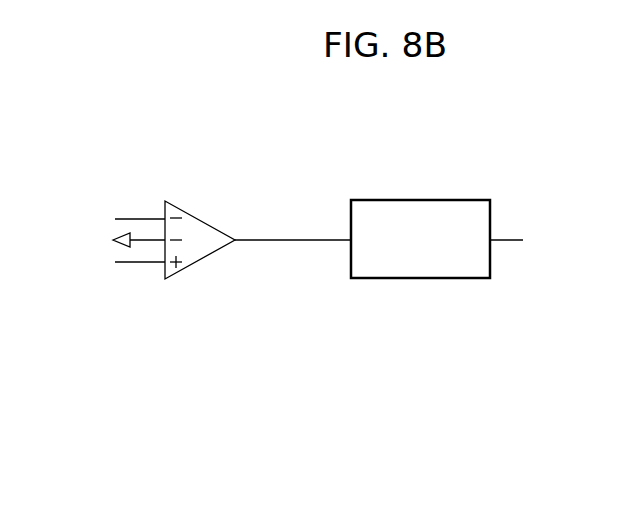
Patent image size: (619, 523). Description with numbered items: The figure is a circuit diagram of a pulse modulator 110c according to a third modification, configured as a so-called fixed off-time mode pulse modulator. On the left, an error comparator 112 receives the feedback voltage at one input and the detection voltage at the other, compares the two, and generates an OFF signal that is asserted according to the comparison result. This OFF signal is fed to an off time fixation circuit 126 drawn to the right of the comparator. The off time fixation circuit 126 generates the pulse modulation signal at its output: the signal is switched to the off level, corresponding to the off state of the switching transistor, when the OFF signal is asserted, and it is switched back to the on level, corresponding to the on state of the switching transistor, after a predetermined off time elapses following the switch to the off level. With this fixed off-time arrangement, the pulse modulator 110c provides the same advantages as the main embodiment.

The pulse modulator 110c is at (350, 449).
The error comparator 112 is at (202, 262).
The off time fixation circuit 126 is at (440, 278).